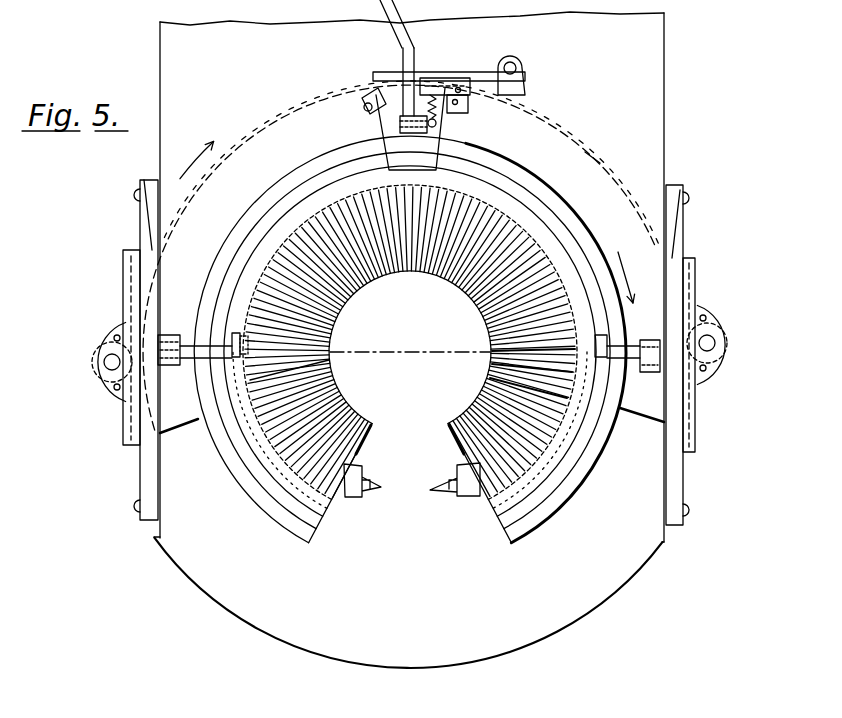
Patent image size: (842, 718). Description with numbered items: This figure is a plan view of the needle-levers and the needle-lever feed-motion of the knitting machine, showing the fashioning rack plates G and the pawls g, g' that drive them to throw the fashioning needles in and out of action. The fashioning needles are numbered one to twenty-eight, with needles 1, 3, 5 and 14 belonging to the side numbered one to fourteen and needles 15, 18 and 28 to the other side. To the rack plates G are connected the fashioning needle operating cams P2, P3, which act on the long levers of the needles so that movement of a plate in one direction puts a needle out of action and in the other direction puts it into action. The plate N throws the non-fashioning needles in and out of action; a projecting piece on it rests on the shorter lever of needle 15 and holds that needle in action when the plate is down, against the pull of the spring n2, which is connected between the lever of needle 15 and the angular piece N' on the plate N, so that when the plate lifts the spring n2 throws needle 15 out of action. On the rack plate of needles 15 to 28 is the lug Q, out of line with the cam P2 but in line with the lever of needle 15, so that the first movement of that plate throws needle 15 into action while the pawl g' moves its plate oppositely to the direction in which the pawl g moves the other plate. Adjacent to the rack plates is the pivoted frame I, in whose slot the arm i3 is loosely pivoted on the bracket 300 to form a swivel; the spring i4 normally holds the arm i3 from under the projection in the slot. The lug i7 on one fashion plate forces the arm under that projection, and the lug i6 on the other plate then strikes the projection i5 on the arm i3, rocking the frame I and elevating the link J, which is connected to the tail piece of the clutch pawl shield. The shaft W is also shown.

The fashioning rack plate G is at (401, 255).
The frame I is at (416, 50).
The link J is at (407, 10).
The arm i3 is at (477, 78).
The spring i4 is at (447, 122).
The projection i5 is at (441, 80).
The lug i6 is at (480, 98).
The lug i7 is at (376, 90).
The bracket 300 is at (522, 72).
The plate N is at (410, 313).
The angular piece N' is at (213, 320).
The fashioning needle operating cam P2 is at (283, 185).
The fashioning needle operating cam P3 is at (578, 232).
The lug Q is at (228, 352).
The type wheel shaft W is at (230, 357).
The spring n2 is at (240, 368).
The pawl g is at (718, 345).
The pawl g' is at (99, 362).
The fashioning needle 1 is at (492, 352).
The fashioning needle 3 is at (493, 365).
The fashioning needle 5 is at (489, 379).
The fashioning needle 14 is at (451, 425).
The fashioning needle 15 is at (330, 353).
The fashioning needle 18 is at (332, 362).
The fashioning needle 28 is at (368, 427).